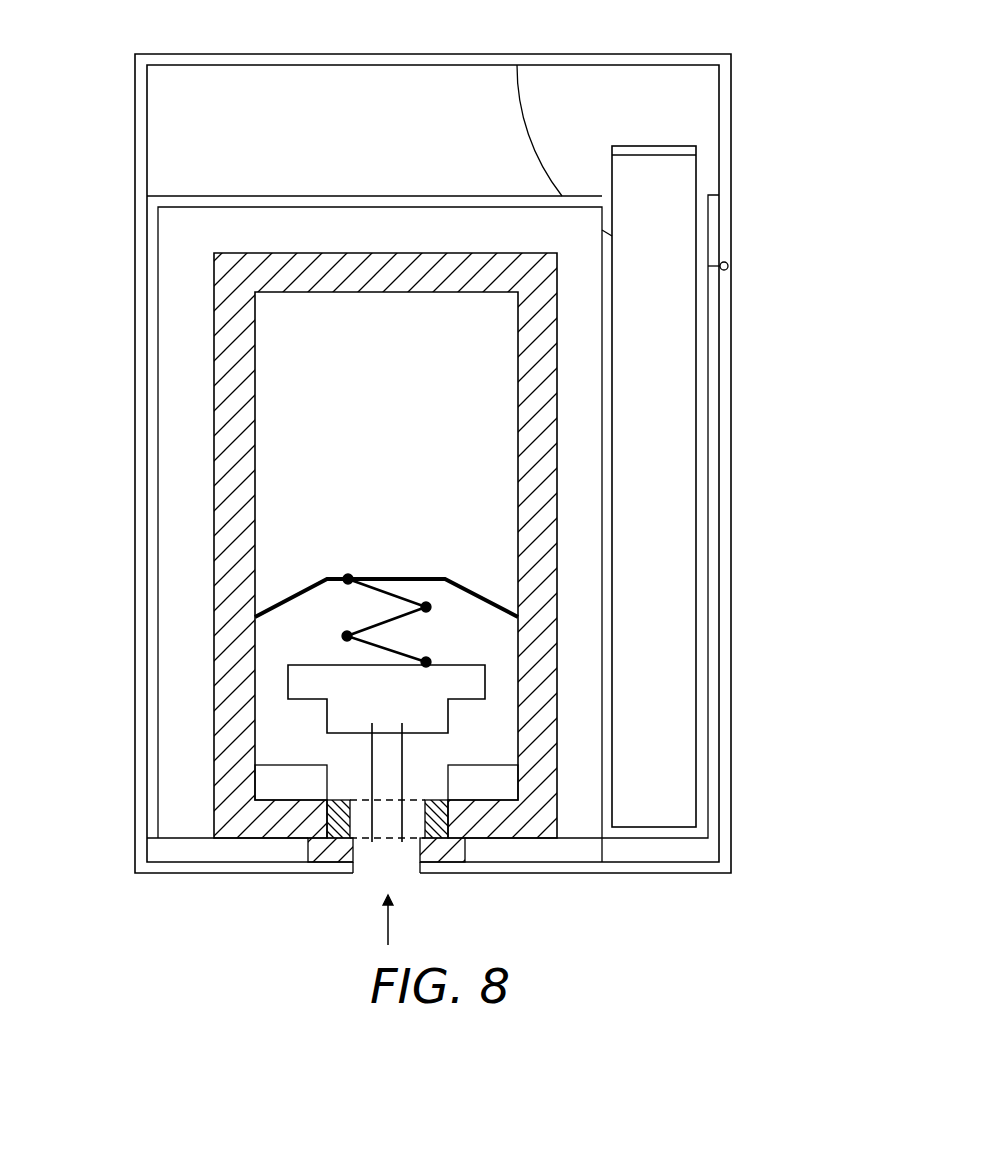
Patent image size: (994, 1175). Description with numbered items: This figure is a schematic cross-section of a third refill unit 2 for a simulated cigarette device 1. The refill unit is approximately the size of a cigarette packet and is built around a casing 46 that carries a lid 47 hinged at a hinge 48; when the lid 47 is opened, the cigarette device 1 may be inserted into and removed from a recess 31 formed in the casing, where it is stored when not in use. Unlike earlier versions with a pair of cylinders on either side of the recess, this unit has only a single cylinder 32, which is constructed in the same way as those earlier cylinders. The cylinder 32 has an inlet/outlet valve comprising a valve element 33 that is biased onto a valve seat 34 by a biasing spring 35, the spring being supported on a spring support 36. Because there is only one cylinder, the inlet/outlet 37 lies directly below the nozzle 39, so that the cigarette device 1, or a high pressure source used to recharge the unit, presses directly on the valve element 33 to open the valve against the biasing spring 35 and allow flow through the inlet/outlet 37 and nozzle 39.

The refill unit 2 is at (111, 133).
The simulated cigarette device 1 is at (670, 457).
The recess 31 is at (703, 622).
The cylinder 32 is at (370, 475).
The valve element 33 is at (373, 700).
The valve seat 34 is at (315, 763).
The biasing spring 35 is at (430, 611).
The spring support 36 is at (420, 577).
The inlet/outlet 37 is at (355, 842).
The nozzle 39 is at (405, 745).
The casing 46 is at (733, 727).
The lid 47 is at (637, 54).
The hinge 48 is at (728, 266).